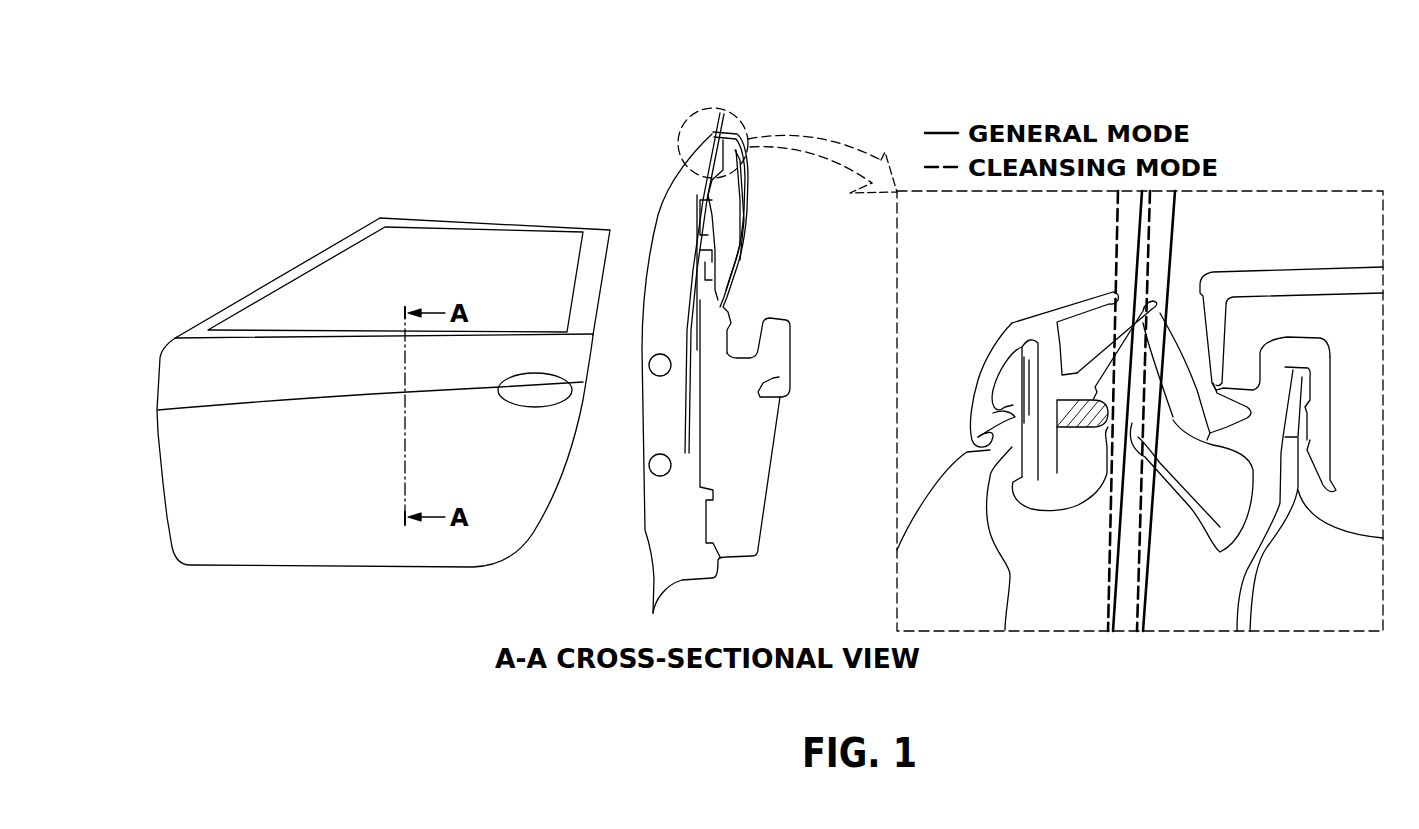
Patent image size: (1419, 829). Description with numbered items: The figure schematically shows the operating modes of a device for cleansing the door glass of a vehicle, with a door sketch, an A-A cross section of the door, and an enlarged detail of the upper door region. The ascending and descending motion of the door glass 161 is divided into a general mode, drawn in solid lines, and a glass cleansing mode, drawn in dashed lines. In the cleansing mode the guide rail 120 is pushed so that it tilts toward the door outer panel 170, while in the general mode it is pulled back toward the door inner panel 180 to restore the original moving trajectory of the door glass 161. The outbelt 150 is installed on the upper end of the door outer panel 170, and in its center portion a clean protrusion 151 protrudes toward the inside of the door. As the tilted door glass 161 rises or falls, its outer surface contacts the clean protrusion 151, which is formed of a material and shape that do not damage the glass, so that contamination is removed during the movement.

The guide rail 120 is at (700, 348).
The outbelt 150 is at (1012, 342).
The clean protrusion 151 is at (1070, 440).
The door glass 161 is at (703, 199).
The door outer panel 170 is at (1010, 575).
The door inner panel 180 is at (1260, 587).